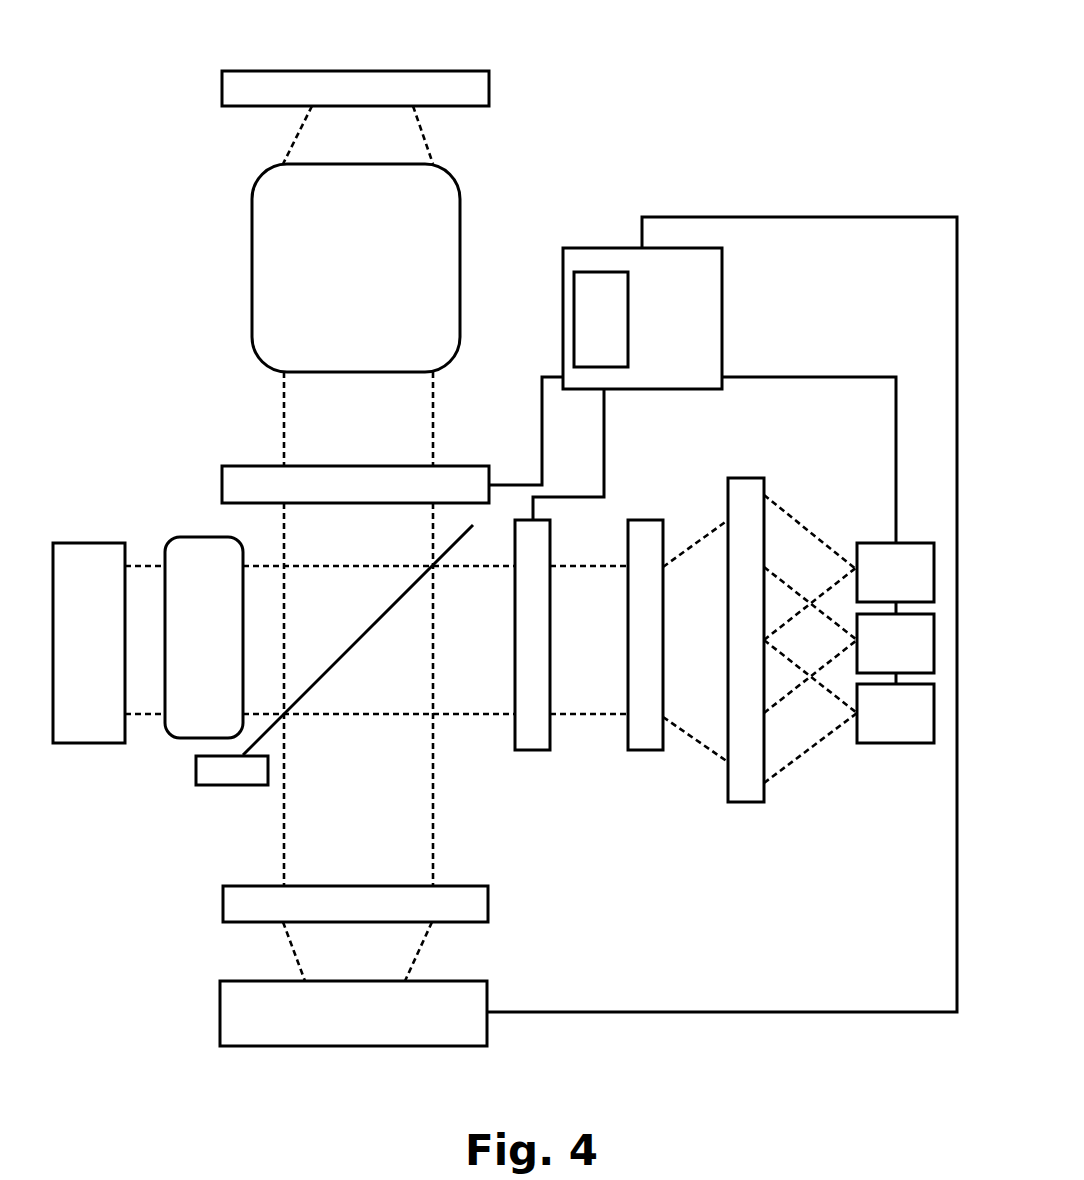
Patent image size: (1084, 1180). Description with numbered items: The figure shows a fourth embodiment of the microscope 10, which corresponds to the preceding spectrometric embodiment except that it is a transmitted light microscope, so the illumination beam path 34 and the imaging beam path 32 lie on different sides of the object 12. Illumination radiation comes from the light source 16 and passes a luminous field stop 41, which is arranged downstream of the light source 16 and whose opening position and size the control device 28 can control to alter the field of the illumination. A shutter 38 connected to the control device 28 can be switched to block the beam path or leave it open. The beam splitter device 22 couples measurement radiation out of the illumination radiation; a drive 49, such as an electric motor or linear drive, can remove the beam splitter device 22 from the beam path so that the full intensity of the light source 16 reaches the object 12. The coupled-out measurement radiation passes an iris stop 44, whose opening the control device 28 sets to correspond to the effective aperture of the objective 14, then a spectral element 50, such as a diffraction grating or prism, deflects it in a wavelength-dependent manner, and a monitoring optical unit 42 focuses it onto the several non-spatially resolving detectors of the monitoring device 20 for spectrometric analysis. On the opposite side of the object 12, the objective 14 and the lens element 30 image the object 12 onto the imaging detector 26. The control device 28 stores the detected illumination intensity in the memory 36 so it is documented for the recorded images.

The microscope 10 is at (730, 116).
The object 12 is at (222, 89).
The objective 14 is at (252, 268).
The light source 16 is at (220, 1012).
The monitoring device 20 is at (896, 743).
The beam splitter device 22 is at (390, 607).
The imaging detector 26 is at (89, 743).
The control device 28 is at (615, 248).
The lens element 30 is at (205, 537).
The imaging beam path 32 is at (145, 452).
The illumination beam path 34 is at (450, 809).
The memory 36 is at (600, 272).
The shutter 38 is at (222, 484).
The luminous field stop 41 is at (223, 905).
The monitoring optical unit 42 is at (745, 802).
The iris stop 44 is at (533, 750).
The drive 49 is at (196, 770).
The spectral element 50 is at (643, 750).